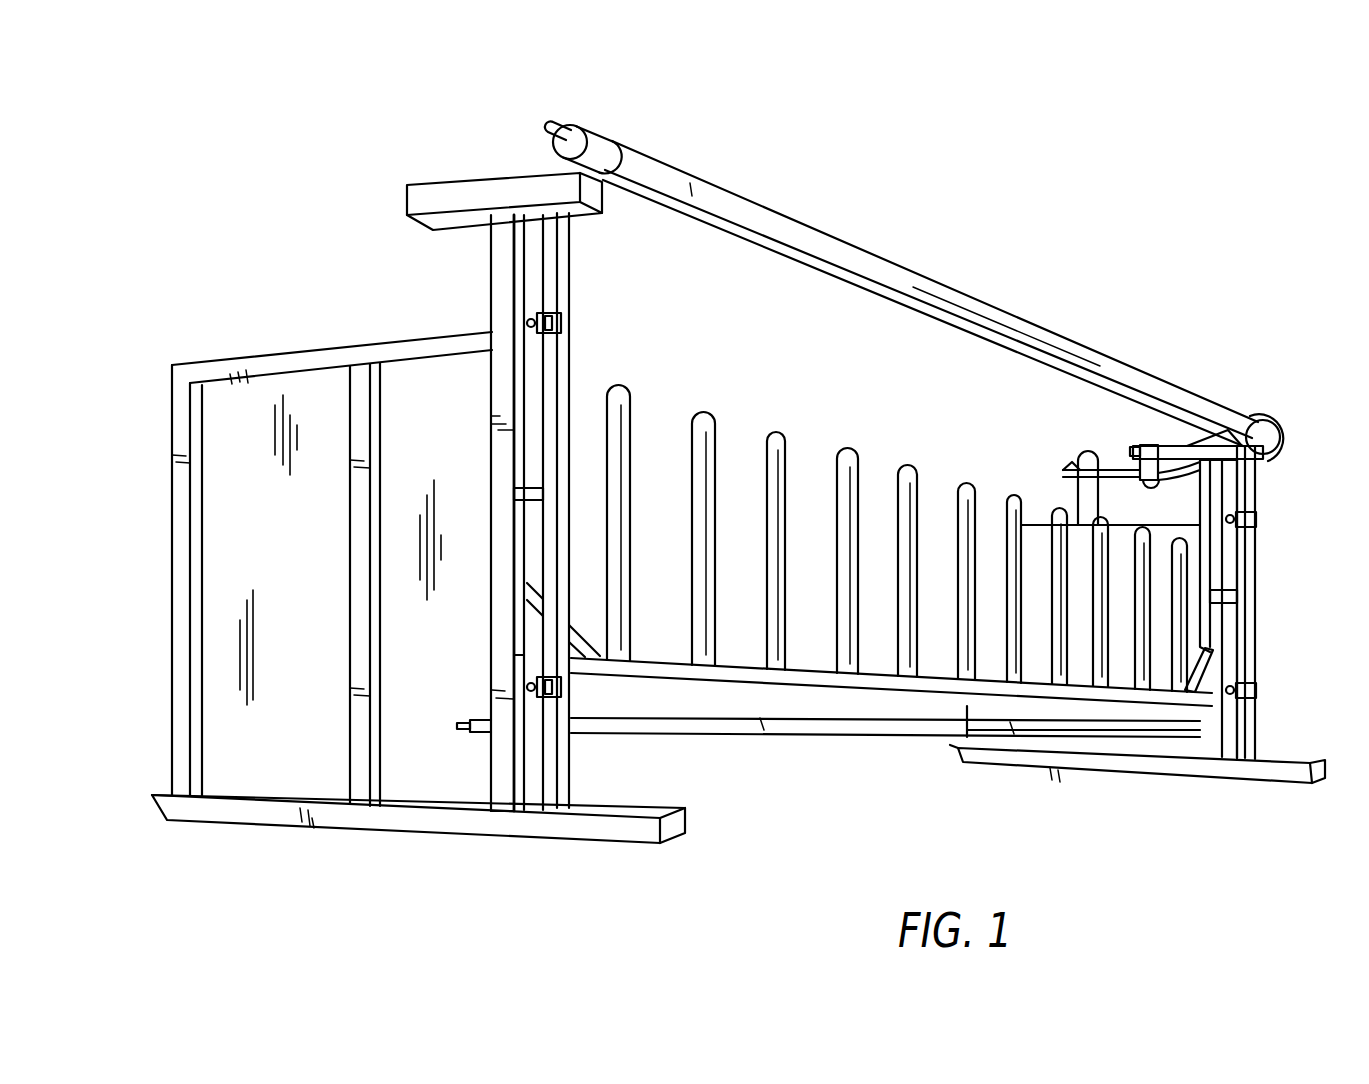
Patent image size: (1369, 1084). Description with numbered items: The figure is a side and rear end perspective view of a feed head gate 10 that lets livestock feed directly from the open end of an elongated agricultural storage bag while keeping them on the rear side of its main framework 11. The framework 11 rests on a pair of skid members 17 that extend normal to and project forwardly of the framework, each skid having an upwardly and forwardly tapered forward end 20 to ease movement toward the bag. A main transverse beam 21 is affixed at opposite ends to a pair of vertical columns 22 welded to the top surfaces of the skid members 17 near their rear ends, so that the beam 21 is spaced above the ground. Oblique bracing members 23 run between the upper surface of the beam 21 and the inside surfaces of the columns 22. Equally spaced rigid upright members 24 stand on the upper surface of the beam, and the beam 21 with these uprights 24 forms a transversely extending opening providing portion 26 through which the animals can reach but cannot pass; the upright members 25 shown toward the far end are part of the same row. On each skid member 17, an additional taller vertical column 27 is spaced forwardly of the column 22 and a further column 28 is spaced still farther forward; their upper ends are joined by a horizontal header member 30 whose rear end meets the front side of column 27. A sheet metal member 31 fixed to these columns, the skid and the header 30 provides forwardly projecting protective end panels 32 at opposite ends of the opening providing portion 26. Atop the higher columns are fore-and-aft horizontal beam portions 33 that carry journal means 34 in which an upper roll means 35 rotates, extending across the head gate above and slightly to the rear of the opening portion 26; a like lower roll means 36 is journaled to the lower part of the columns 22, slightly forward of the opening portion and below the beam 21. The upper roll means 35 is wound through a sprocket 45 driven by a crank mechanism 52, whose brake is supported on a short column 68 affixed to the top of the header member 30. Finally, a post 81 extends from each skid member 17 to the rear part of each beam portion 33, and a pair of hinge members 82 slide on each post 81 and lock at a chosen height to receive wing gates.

The feed head gate 10 is at (1296, 422).
The main framework 11 is at (1260, 590).
The skid member 17 is at (310, 820).
The forward end 20 is at (720, 821).
The main transverse beam 21 is at (885, 677).
The vertical column 22 is at (498, 665).
The oblique bracing member 23 is at (575, 640).
The rigid upright member 24 is at (781, 432).
The vertical bars 25 is at (993, 507).
The opening providing portion 26 is at (826, 648).
The vertical column 27 is at (352, 634).
The vertical column 28 is at (172, 650).
The horizontal header member 30 is at (318, 352).
The sheet metal member 31 is at (296, 517).
The protective end panel 32 is at (160, 573).
The horizontal beam portion 33 is at (466, 187).
The journal means 34 is at (598, 132).
The upper roll means 35 is at (1001, 306).
The lower roll means 36 is at (862, 736).
The sprocket 45 is at (1277, 424).
The crank mechanism 52 is at (1117, 471).
The short column 68 is at (1083, 452).
The post 81 is at (566, 270).
The hinge member 82 is at (562, 324).